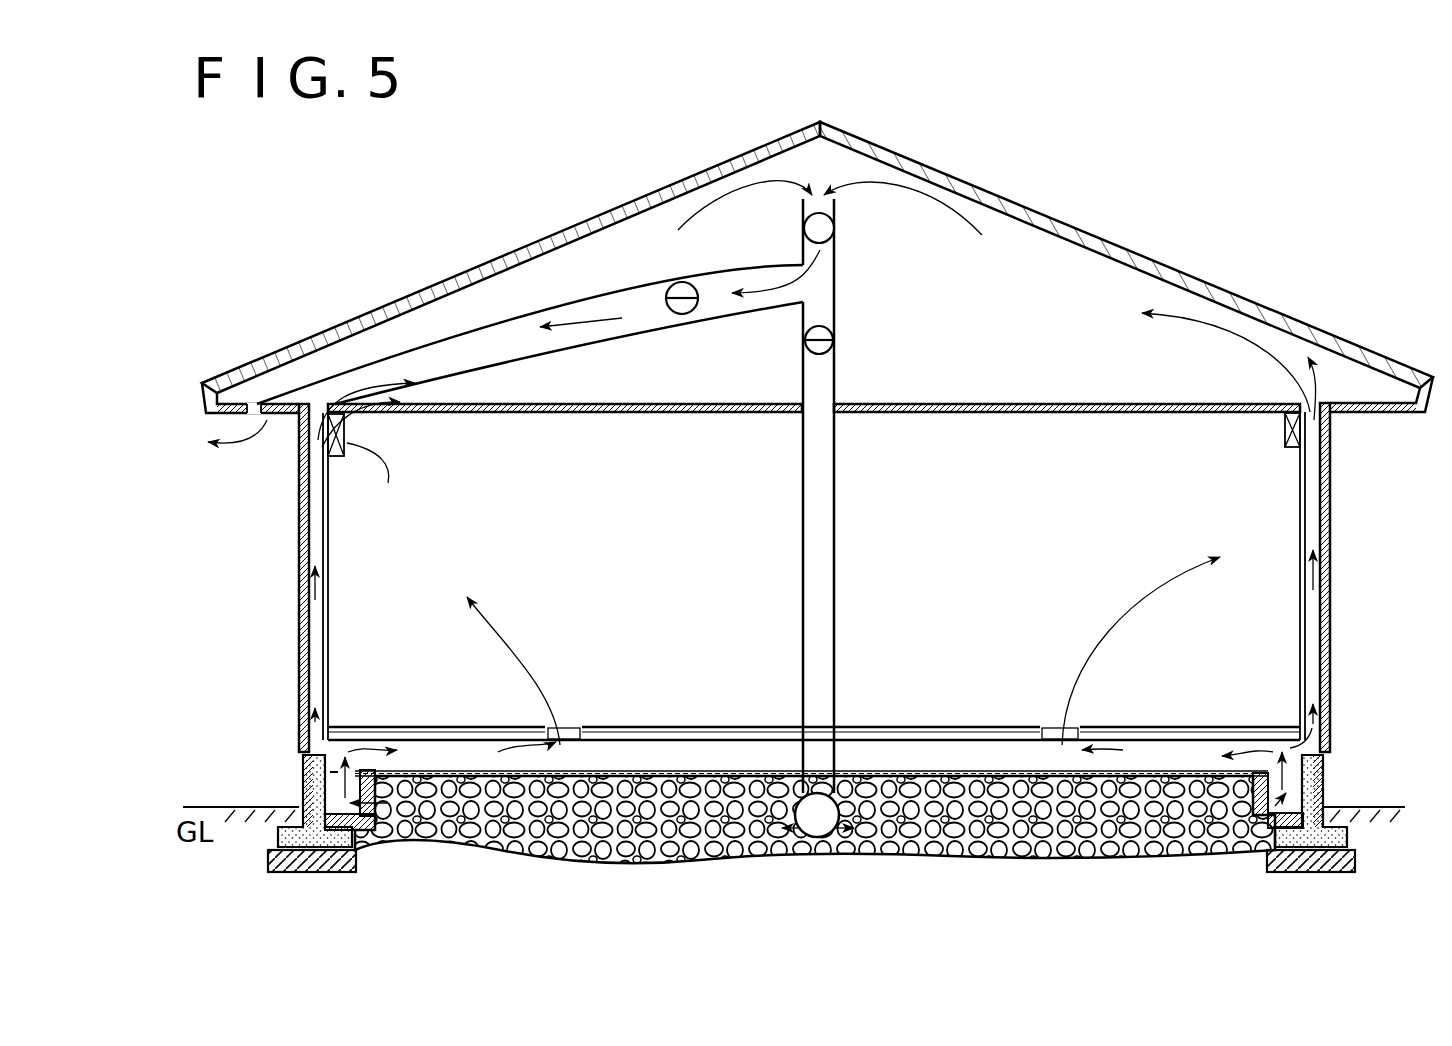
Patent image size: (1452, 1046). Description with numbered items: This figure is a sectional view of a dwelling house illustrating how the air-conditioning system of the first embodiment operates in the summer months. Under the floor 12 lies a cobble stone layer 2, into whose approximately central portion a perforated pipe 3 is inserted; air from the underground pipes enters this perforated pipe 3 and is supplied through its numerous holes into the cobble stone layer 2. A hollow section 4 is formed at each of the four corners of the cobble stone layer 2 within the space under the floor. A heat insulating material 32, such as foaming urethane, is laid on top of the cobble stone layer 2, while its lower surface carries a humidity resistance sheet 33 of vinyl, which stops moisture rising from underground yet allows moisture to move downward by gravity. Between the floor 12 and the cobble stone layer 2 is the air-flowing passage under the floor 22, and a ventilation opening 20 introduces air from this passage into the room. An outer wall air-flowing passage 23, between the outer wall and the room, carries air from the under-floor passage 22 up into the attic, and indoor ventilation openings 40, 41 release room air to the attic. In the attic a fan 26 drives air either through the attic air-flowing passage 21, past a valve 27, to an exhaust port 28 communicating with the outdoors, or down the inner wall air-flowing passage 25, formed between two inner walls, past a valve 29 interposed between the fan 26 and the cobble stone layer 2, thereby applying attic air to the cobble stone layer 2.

The cobble stone layer 2 is at (647, 838).
The perforated pipe 3 is at (815, 838).
The hollow section 4 is at (302, 788).
The floor 12 is at (902, 726).
The ventilation opening 20 is at (1048, 727).
The attic air-flowing passage 21 is at (447, 346).
The air-flowing passage under the floor 22 is at (438, 752).
The outer wall air-flowing passage 23 is at (312, 527).
The inner wall air-flowing passage 25 is at (820, 627).
The fan 26 is at (834, 226).
The valve 27 is at (682, 310).
The exhaust port 28 is at (280, 418).
The valve 29 is at (803, 350).
The heat insulating material 32 is at (485, 770).
The humidity resistance sheet 33 is at (1140, 860).
The indoor ventilation opening 40 is at (338, 450).
The indoor ventilation opening 41 is at (1288, 449).